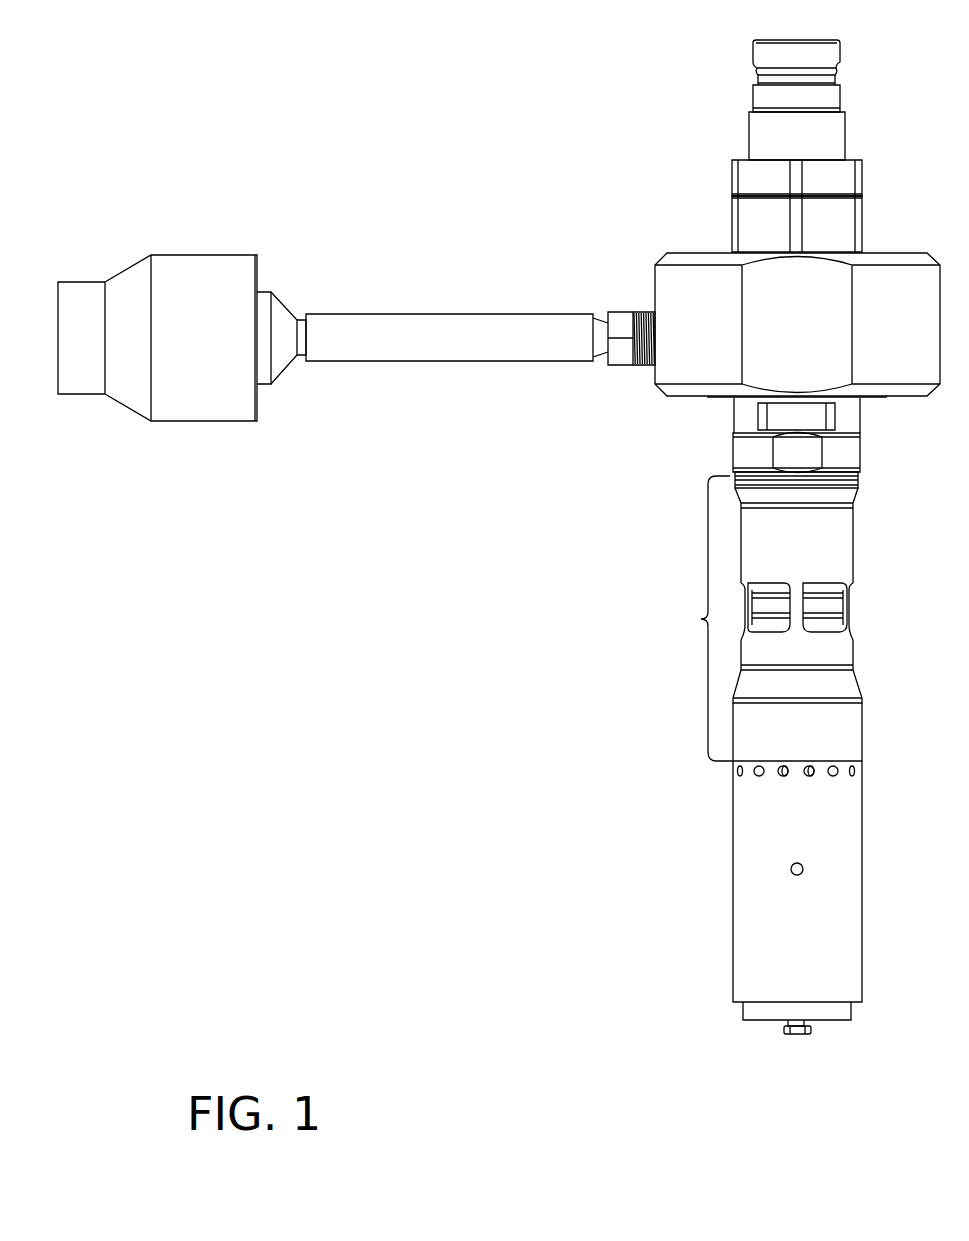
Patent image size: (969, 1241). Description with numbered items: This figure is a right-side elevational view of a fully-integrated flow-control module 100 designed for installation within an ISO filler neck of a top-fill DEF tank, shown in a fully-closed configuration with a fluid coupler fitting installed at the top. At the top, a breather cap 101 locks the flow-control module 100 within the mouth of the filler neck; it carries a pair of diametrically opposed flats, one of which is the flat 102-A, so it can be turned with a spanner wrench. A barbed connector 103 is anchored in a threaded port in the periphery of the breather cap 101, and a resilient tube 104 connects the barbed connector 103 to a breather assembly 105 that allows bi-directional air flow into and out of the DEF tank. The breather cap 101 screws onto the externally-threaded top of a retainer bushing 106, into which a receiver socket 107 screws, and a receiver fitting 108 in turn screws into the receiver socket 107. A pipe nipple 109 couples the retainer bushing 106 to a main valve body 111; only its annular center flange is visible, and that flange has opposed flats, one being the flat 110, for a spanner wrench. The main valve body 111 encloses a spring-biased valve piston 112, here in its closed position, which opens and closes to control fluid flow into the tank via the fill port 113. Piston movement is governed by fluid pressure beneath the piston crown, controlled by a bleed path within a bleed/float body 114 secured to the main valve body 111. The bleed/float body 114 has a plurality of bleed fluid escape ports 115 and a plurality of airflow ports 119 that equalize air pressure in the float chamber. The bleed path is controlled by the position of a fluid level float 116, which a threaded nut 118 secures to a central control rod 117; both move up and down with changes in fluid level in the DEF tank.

The flow-control module 100 is at (648, 41).
The breather cap 101 is at (676, 302).
The flat 102-A is at (780, 320).
The barbed connector 103 is at (618, 358).
The resilient tube 104 is at (464, 347).
The breather assembly 105 is at (194, 372).
The retainer bushing 106 is at (748, 412).
The receiver socket 107 is at (760, 228).
The receiver fitting 108 is at (777, 140).
The pipe nipple 109 is at (748, 452).
The flat 110 is at (803, 452).
The main valve body 111 is at (700, 619).
The valve piston 112 is at (832, 607).
The fill port 113 is at (833, 634).
The bleed/float body 114 is at (753, 890).
The bleed fluid escape ports 115 is at (824, 777).
The fluid level float 116 is at (754, 1010).
The central control rod 117 is at (787, 1023).
The threaded nut 118 is at (787, 1034).
The airflow ports 119 is at (788, 865).